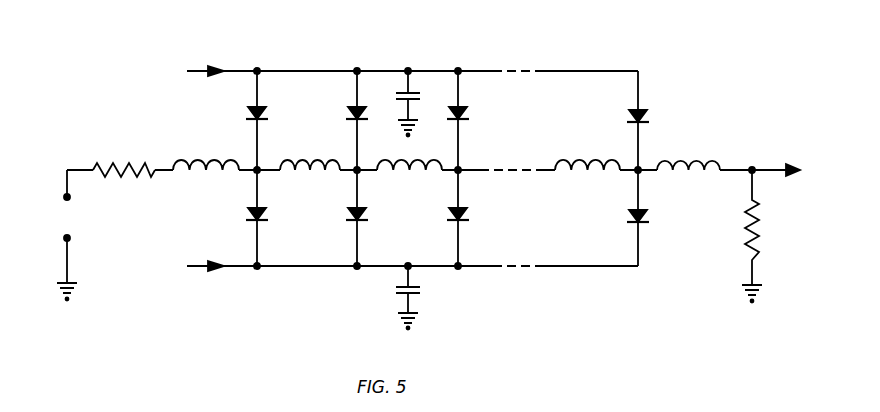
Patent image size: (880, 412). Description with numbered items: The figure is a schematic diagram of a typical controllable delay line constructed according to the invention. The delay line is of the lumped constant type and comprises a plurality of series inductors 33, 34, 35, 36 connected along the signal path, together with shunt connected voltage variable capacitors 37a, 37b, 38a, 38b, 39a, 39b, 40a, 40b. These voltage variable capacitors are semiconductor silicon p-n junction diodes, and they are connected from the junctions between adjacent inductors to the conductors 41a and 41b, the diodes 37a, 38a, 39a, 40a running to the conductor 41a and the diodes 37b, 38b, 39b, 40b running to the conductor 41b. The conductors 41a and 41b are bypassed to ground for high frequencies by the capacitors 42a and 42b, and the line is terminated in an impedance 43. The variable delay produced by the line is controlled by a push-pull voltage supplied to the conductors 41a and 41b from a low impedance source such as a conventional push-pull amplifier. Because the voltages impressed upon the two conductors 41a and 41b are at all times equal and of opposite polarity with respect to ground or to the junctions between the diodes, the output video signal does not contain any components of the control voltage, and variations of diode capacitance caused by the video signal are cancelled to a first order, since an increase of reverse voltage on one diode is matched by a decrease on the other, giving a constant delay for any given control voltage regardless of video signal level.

The series inductor 33 is at (222, 162).
The series inductor 34 is at (324, 164).
The series inductor 35 is at (424, 176).
The series inductor 36 is at (578, 162).
The voltage variable capacitor 37a is at (253, 112).
The voltage variable capacitor 37b is at (252, 210).
The voltage variable capacitor 38a is at (352, 113).
The voltage variable capacitor 38b is at (352, 212).
The voltage variable capacitor 39a is at (464, 112).
The voltage variable capacitor 39b is at (464, 215).
The voltage variable capacitor 40a is at (646, 116).
The voltage variable capacitor 40b is at (646, 215).
The conductor 41a is at (244, 69).
The conductor 41b is at (244, 268).
The capacitor 42a is at (414, 92).
The capacitor 42b is at (419, 293).
The impedance 43 is at (746, 238).